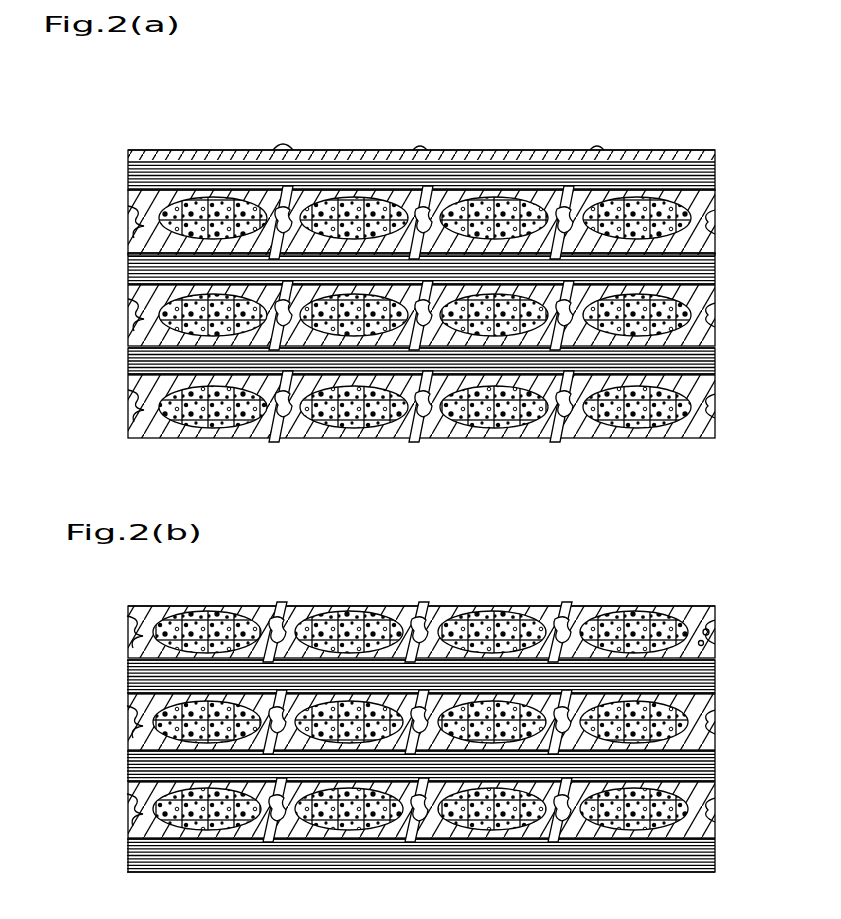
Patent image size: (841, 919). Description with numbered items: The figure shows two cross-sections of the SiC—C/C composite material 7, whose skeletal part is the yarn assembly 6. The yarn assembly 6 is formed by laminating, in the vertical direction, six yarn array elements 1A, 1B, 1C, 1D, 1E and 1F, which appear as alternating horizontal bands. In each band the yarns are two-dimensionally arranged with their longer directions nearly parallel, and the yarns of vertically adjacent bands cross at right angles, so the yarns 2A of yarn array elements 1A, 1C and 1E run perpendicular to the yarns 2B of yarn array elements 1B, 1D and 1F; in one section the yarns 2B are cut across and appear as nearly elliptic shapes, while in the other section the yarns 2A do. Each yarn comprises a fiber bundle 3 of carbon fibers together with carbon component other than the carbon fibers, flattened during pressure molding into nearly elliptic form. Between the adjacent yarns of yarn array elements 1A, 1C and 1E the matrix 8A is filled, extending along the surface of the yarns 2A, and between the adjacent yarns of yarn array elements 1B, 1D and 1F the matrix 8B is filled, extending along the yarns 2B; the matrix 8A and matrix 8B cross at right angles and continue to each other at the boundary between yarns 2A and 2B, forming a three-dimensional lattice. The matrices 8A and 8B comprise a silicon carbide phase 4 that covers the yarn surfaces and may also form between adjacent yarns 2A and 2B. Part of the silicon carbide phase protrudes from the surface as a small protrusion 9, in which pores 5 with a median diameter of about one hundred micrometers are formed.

In FIG. 2A, the yarn array element 1A is at (732, 151).
In FIG. 2B, the yarn array element 1A is at (732, 607).
In FIG. 2A, the yarn array element 1B is at (732, 191).
In FIG. 2B, the yarn array element 1B is at (732, 661).
In FIG. 2A, the yarn array element 1C is at (732, 254).
In FIG. 2B, the yarn array element 1C is at (732, 695).
In FIG. 2A, the yarn array element 1D is at (732, 286).
In FIG. 2B, the yarn array element 1D is at (732, 752).
In FIG. 2A, the yarn array element 1E is at (732, 349).
In FIG. 2B, the yarn array element 1E is at (732, 783).
In FIG. 2A, the yarn array element 1F is at (732, 376).
In FIG. 2B, the yarn array element 1F is at (732, 840).
In FIG. 2A, the yarn 2A is at (203, 178).
In FIG. 2B, the yarn 2A is at (155, 635).
In FIG. 2A, the yarn 2B is at (398, 266).
In FIG. 2B, the yarn 2B is at (126, 673).
In FIG. 2A, the fiber bundle 3 is at (341, 215).
In FIG. 2A, the silicon carbide phase 4 is at (143, 150).
In FIG. 2B, the silicon carbide phase 4 is at (225, 607).
In FIG. 2A, the pores 5 is at (294, 207).
In FIG. 2A, the yarn assembly 6 is at (718, 152).
In FIG. 2A, the SiC—C/C composite material 7 is at (428, 256).
In FIG. 2B, the SiC—C/C composite material 7 is at (417, 712).
In FIG. 2B, the matrix 8A is at (485, 606).
In FIG. 2A, the matrix 8B is at (437, 190).
In FIG. 2A, the small protrusion 9 is at (283, 149).